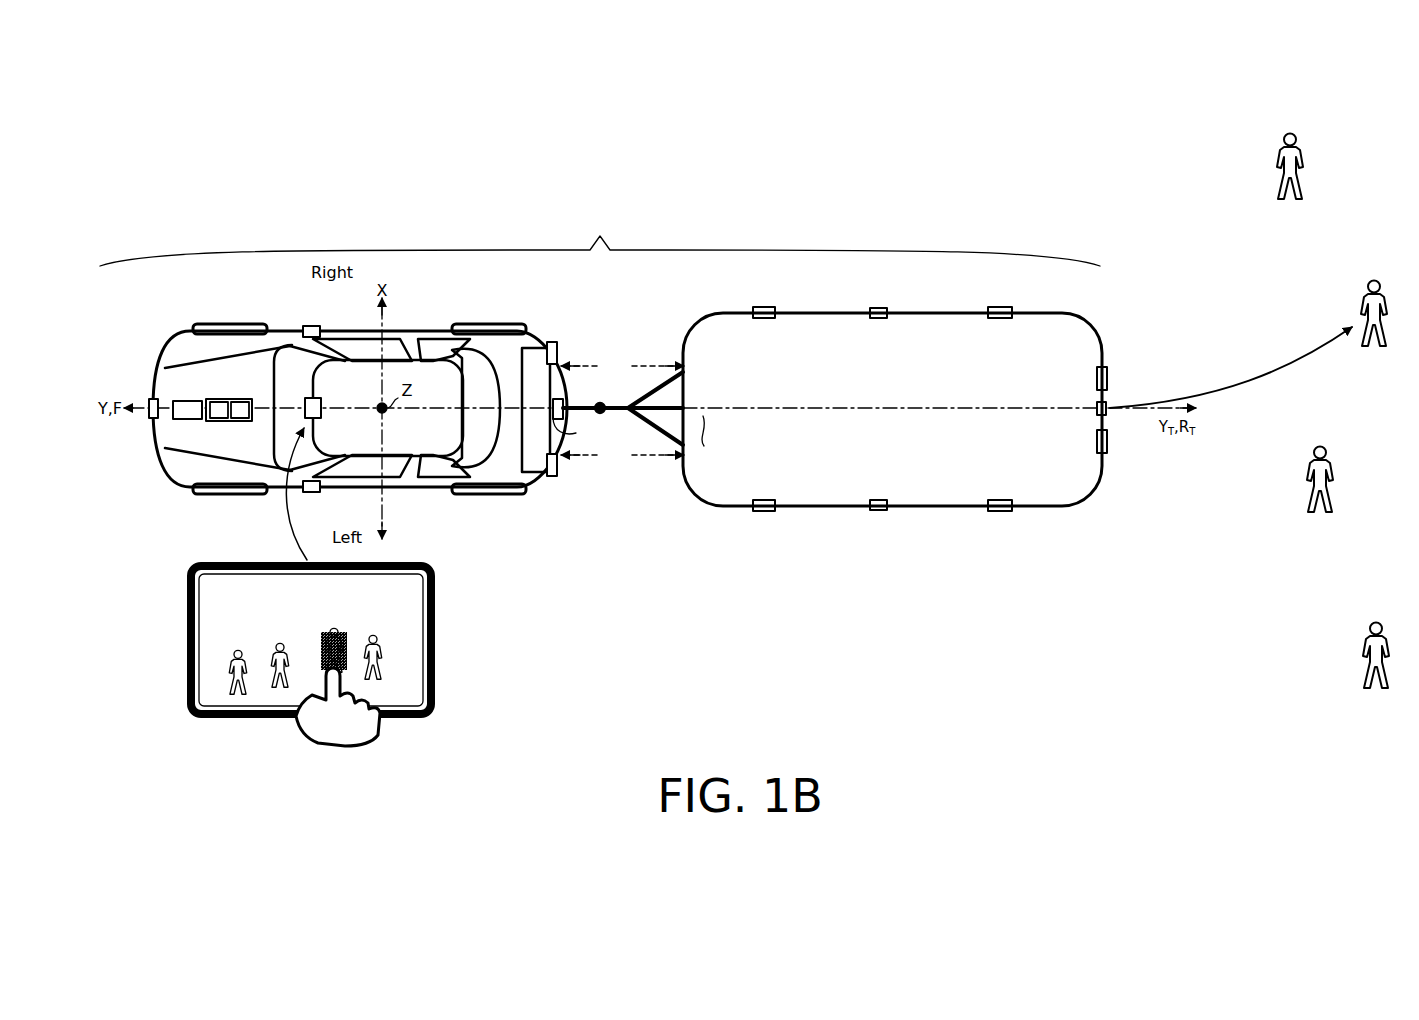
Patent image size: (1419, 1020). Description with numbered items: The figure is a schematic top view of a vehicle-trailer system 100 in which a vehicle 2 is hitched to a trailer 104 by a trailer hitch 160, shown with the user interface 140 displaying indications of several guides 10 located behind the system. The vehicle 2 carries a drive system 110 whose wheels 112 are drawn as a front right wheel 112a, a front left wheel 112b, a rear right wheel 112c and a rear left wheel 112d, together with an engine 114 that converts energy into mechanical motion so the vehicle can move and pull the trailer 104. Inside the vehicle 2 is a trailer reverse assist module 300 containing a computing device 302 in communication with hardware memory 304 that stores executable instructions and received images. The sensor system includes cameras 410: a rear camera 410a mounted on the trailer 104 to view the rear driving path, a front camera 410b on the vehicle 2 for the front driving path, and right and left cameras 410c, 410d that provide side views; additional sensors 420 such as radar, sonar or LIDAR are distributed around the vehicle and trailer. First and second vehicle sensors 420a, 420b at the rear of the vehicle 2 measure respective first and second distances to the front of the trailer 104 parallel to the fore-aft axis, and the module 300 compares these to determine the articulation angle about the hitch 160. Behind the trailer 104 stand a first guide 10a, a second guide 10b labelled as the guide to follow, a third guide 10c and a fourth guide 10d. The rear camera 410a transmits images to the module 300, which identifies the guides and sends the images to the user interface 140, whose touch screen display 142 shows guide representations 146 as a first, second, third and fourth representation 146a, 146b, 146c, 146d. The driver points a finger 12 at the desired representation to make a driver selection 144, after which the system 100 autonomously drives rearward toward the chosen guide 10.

The vehicle 2 is at (753, 440).
The guide 10 is at (753, 440).
The first guide 10a is at (1290, 199).
The second guide 10b is at (1374, 345).
The third guide 10c is at (1320, 510).
The fourth guide 10d is at (1376, 687).
The finger 12 is at (300, 712).
The vehicle-trailer system 100 is at (600, 238).
The trailer 104 is at (875, 387).
The drive system 110 is at (359, 410).
The wheel 112 is at (359, 410).
The front right wheel 112a is at (230, 322).
The front left wheel 112b is at (232, 496).
The rear right wheel 112c is at (470, 322).
The rear left wheel 112d is at (470, 496).
The engine 114 is at (187, 401).
The user interface 140 is at (322, 404).
The touch screen display 142 is at (410, 633).
The driver selection 144 is at (342, 626).
The guide representation 146 is at (311, 641).
The first guide representation 146a is at (373, 638).
The second guide representation 146b is at (332, 631).
The third guide representation 146c is at (280, 645).
The fourth guide representation 146d is at (236, 652).
The trailer hitch 160 is at (600, 402).
The trailer reverse assist module 300 is at (228, 409).
The computing device 302 is at (216, 421).
The hardware memory 304 is at (240, 421).
The camera 410 is at (604, 407).
The rear camera 410a is at (1097, 409).
The front camera 410b is at (150, 401).
The right camera 410c is at (313, 326).
The left camera 410d is at (312, 492).
The sensor 420 is at (817, 407).
The first vehicle sensor 420a is at (552, 341).
The second vehicle sensor 420b is at (551, 477).